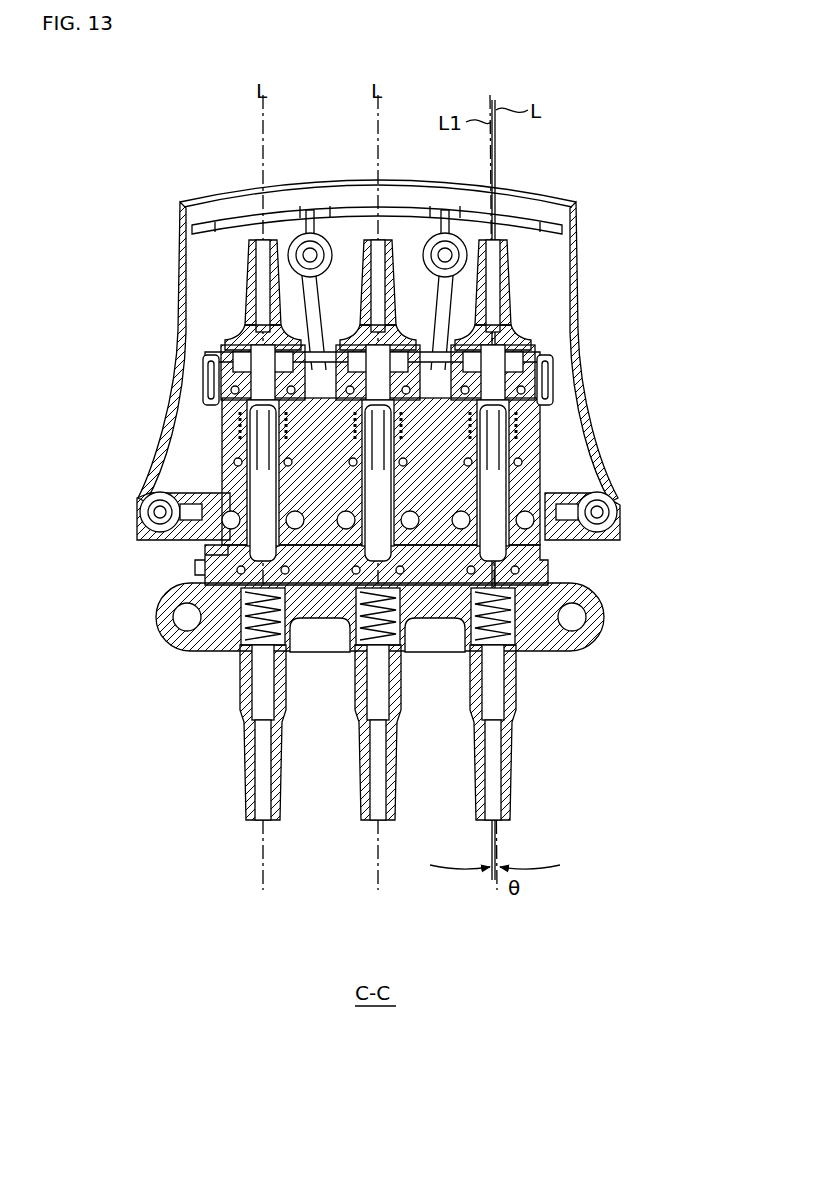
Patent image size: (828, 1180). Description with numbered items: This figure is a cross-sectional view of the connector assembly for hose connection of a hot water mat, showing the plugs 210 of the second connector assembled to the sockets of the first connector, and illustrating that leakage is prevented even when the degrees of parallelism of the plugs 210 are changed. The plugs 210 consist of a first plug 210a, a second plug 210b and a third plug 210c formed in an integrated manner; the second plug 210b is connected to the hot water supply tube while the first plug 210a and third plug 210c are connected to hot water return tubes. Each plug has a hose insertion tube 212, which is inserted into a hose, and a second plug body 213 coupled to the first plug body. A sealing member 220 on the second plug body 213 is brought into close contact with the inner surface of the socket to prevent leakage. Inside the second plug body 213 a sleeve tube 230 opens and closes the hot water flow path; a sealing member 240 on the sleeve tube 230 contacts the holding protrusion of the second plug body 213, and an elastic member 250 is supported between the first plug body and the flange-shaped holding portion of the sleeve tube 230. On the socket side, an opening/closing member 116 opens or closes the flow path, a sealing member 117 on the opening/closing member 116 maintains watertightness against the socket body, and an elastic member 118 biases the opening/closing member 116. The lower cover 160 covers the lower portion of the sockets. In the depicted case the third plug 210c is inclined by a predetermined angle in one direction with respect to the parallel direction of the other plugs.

The lower cover 160 is at (570, 292).
The sealing member 117 is at (533, 352).
The opening/closing member 116 is at (450, 384).
The elastic member 118 is at (518, 415).
The sealing member 220 is at (525, 465).
The sleeve tube 230 is at (505, 470).
The second plug body 213 is at (600, 512).
The sealing member 240 is at (518, 565).
The elastic member 250 is at (555, 613).
The hose insertion tube 212 is at (505, 757).
The first plug 210a is at (253, 828).
The second plug 210b is at (368, 828).
The third plug 210c is at (564, 577).
The plugs 210 is at (483, 916).